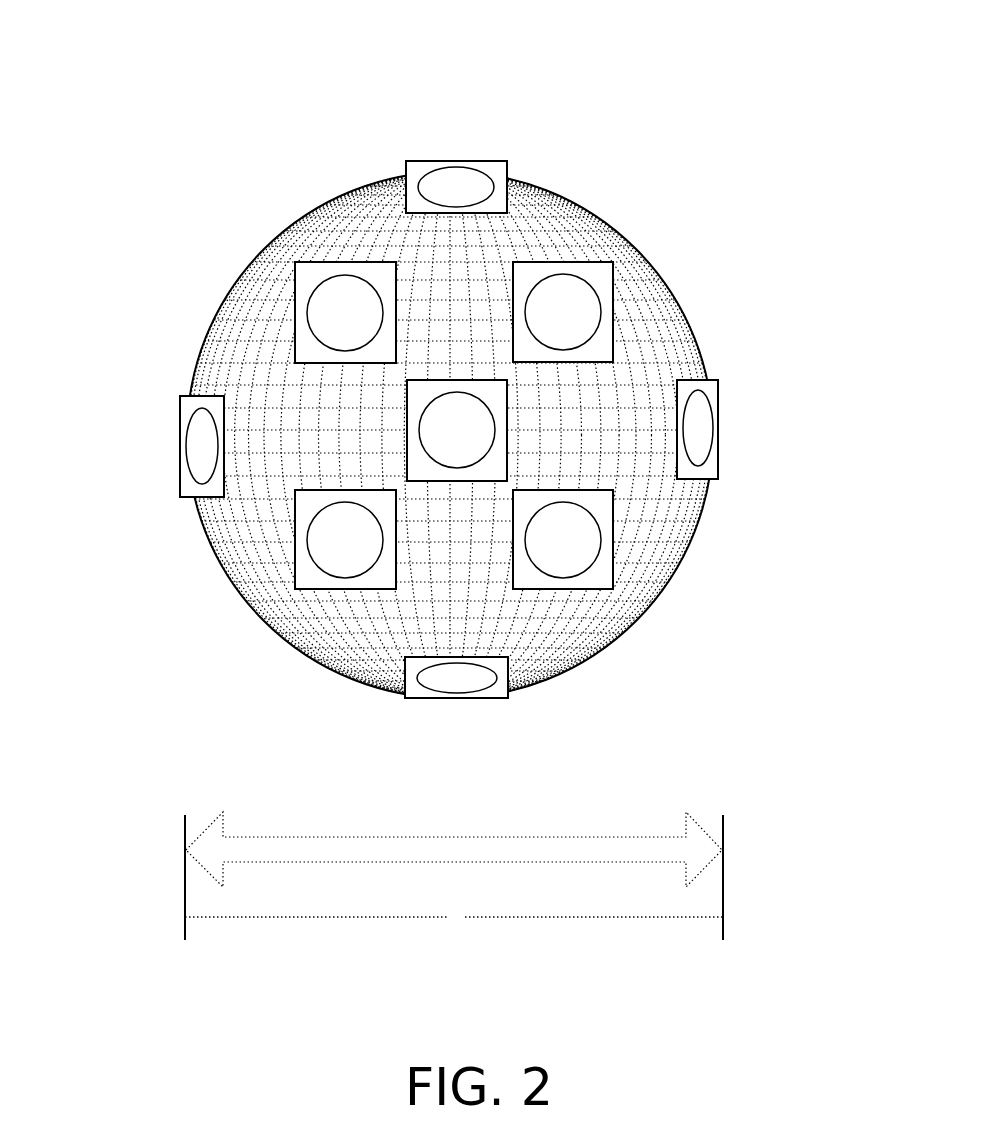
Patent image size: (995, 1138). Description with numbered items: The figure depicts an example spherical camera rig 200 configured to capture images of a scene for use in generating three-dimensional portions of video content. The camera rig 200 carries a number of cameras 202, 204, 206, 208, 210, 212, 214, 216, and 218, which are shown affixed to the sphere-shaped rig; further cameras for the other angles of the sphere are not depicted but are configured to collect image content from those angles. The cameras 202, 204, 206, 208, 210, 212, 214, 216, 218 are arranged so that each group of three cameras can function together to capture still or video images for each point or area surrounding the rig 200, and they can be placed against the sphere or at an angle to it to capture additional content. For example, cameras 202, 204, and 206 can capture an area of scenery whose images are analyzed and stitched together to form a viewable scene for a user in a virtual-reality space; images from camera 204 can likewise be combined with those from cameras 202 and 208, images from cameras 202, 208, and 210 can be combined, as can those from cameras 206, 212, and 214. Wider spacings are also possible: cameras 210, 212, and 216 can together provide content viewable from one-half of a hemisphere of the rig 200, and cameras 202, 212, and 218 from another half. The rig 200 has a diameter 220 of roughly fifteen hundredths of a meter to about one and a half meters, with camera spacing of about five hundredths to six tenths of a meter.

The spherical camera rig 200 is at (768, 82).
The camera 202 is at (295, 281).
The camera 204 is at (405, 428).
The camera 206 is at (613, 277).
The camera 208 is at (295, 547).
The camera 210 is at (180, 443).
The camera 212 is at (715, 420).
The camera 214 is at (602, 547).
The camera 216 is at (405, 697).
The camera 218 is at (506, 161).
The diameter 220 is at (317, 917).